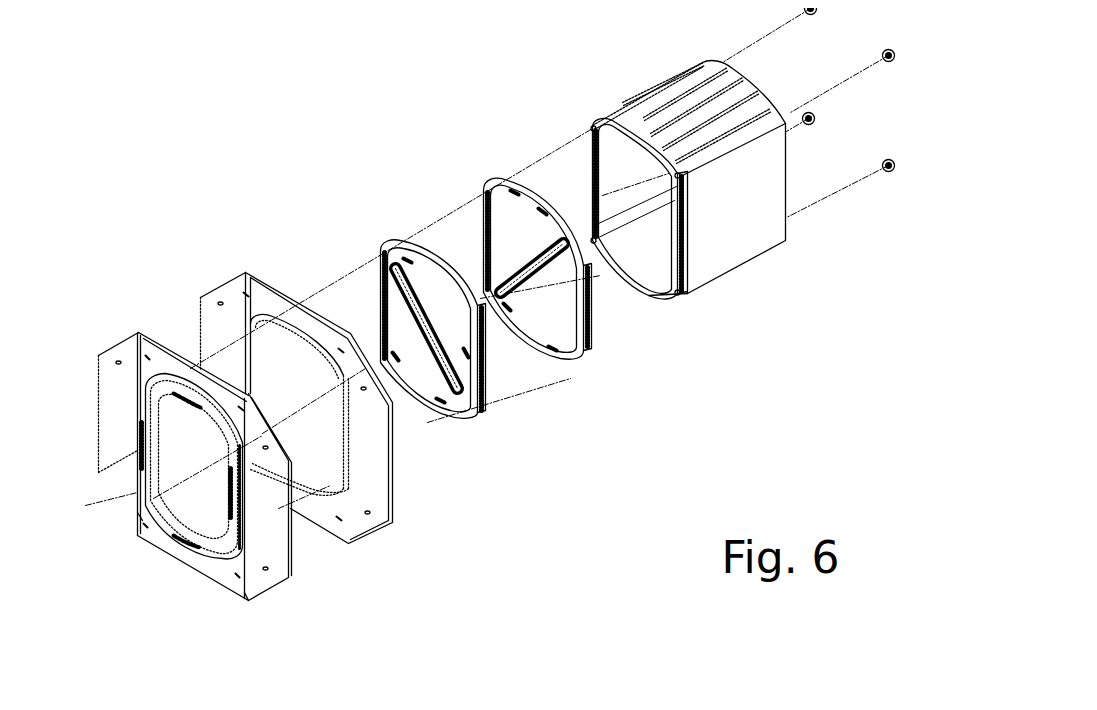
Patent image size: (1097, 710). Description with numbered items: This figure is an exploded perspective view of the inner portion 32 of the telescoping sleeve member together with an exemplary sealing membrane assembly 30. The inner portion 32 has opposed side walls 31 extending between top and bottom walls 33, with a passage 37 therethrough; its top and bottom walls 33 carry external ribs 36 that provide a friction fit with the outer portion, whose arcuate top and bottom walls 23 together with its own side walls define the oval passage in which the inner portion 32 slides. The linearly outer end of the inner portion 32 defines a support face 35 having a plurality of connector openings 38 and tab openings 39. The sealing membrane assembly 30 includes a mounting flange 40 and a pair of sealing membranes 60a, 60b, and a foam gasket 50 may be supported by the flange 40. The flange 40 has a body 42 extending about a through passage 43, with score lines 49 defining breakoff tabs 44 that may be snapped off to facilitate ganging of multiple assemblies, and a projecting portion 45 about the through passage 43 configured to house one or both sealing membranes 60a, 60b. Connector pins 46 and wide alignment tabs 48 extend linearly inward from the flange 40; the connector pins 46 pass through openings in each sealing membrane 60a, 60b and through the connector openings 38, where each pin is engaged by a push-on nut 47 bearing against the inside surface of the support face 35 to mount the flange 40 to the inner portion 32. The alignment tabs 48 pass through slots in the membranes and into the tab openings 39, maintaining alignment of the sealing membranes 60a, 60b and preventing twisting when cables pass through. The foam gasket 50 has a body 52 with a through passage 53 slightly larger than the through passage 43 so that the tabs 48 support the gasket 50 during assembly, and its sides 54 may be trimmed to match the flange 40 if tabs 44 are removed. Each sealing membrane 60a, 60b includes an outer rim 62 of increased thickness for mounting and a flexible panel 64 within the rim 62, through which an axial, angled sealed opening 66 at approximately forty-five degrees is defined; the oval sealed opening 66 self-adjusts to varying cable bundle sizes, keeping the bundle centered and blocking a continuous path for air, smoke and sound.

The top and bottom walls 23 is at (740, 88).
The sealing membrane assembly 30 is at (420, 88).
The side walls 31 is at (619, 184).
The inner portion 32 is at (792, 210).
The top and bottom walls 33 is at (660, 270).
The support face 35 is at (683, 263).
The external ribs 36 is at (677, 82).
The passage 37 is at (641, 246).
The connector openings 38 is at (687, 260).
The tab openings 39 is at (630, 280).
The mounting flange 40 is at (211, 458).
The body 42 is at (163, 353).
The through passage 43 is at (170, 512).
The breakoff tabs 44 is at (110, 463).
The projecting portion 45 is at (142, 407).
The connector pins 46 is at (157, 497).
The push-on nut 47 is at (814, 10).
The alignment tabs 48 is at (158, 428).
The score lines 49 is at (137, 515).
The foam gasket 50 is at (302, 396).
The body 52 is at (262, 302).
The through passage 53 is at (325, 471).
The sides 54 is at (207, 337).
The sealing membrane 60a is at (451, 312).
The sealing membrane 60b is at (585, 322).
The outer rim 62 is at (377, 247).
The flexible panel 64 is at (448, 395).
The sealed opening 66 is at (410, 313).